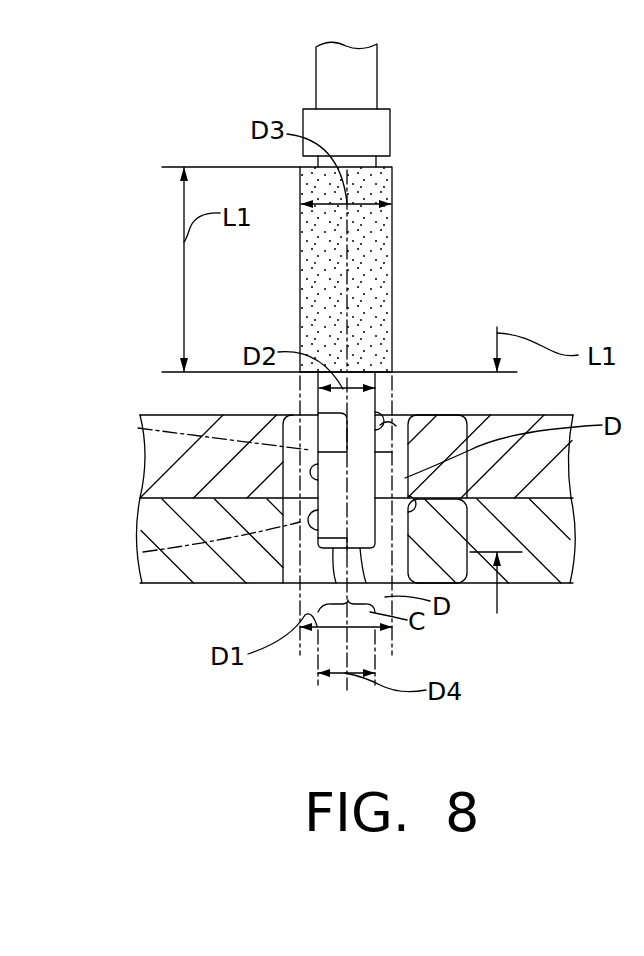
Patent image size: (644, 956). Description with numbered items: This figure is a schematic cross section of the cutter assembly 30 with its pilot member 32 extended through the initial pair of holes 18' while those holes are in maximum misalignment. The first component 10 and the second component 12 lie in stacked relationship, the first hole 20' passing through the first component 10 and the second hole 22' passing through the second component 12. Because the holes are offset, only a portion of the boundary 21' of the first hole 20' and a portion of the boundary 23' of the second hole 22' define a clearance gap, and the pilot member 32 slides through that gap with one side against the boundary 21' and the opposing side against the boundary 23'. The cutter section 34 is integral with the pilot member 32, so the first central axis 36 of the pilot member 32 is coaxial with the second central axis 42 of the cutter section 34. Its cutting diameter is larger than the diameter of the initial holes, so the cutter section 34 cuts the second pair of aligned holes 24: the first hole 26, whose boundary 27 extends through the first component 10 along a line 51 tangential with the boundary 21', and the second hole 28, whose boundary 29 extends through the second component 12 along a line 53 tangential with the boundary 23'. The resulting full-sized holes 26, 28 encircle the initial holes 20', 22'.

The cutter assembly 30 is at (428, 135).
The cutter section 34 is at (373, 287).
The second central axis 42 is at (347, 244).
The first central axis 36 is at (387, 404).
The pilot member 32 is at (357, 382).
The first component 10 is at (552, 472).
The second component 12 is at (552, 553).
The second pair of aligned holes 24 is at (475, 507).
The initial pair of holes 18' is at (236, 499).
The first hole 26 is at (409, 450).
The second hole 28 is at (415, 543).
The first hole 20' is at (323, 417).
The boundary 21' is at (269, 437).
The boundary 23' is at (338, 529).
The line 51 is at (395, 428).
The boundary 27 is at (138, 428).
The boundary 29 is at (143, 552).
The line 53 is at (298, 552).
The second hole 22' is at (295, 577).